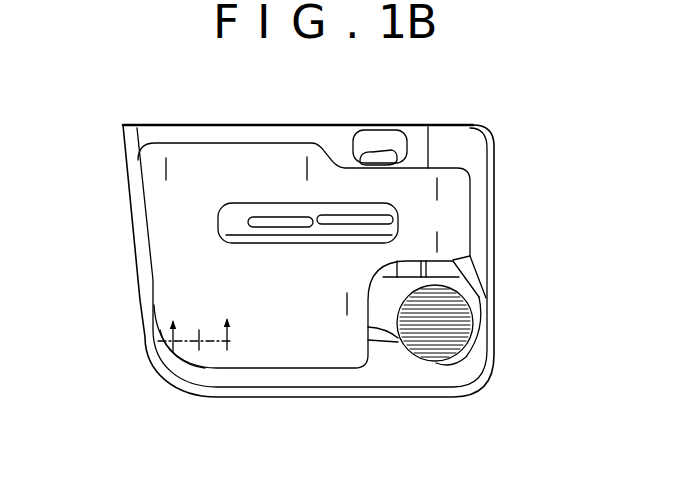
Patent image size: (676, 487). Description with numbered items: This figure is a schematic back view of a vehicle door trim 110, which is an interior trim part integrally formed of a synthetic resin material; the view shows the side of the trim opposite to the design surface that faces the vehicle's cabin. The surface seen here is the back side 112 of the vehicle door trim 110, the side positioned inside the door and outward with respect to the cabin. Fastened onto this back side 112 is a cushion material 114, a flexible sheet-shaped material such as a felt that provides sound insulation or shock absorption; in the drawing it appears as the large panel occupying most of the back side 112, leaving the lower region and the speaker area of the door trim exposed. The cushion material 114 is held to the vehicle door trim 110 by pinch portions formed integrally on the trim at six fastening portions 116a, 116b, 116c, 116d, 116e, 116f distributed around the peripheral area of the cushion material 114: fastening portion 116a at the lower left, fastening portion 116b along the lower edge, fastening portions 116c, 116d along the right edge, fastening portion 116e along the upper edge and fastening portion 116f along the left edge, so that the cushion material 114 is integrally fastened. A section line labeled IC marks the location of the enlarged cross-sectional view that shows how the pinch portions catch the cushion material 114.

The vehicle door trim 110 is at (473, 100).
The back side 112 is at (417, 376).
The cushion material 114 is at (279, 333).
The fastening portion 116a is at (186, 364).
The fastening portion 116b is at (341, 326).
The fastening portion 116c is at (445, 243).
The fastening portion 116d is at (445, 188).
The fastening portion 116e is at (305, 150).
The fastening portion 116f is at (153, 170).
The section IC- IC is at (198, 327).